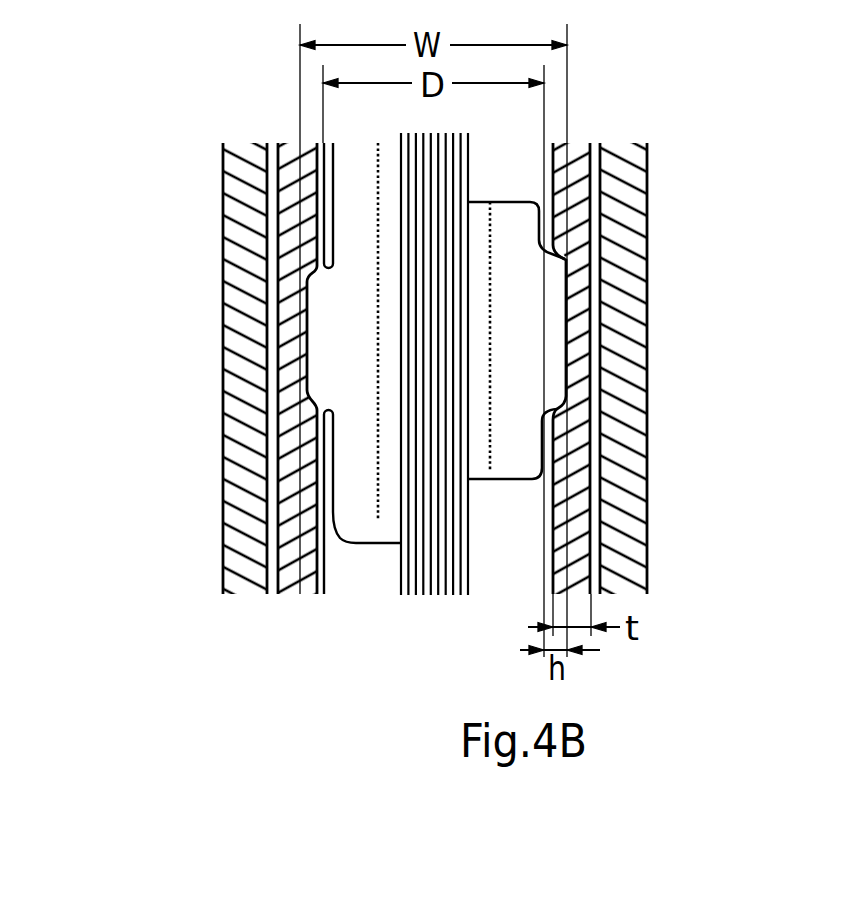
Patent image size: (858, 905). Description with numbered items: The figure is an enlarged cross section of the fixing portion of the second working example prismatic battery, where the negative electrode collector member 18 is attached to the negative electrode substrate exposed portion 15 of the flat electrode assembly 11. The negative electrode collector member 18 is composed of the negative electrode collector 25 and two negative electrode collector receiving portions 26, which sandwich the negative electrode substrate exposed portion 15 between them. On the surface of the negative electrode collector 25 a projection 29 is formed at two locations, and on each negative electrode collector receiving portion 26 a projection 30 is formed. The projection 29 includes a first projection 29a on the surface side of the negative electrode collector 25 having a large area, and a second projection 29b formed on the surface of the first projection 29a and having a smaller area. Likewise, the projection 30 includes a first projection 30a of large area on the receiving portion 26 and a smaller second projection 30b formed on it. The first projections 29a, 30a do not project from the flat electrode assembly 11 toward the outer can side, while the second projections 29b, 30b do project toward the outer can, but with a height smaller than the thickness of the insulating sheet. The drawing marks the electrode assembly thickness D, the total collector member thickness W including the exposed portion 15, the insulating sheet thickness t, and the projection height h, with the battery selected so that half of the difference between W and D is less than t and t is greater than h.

The flat electrode assembly 11 is at (500, 173).
The negative electrode substrate exposed portion 15 is at (417, 187).
The negative electrode collector member 18 is at (413, 437).
The negative electrode collector 25 is at (385, 518).
The negative electrode collector receiving portion 26 is at (487, 467).
The projection 29 is at (221, 368).
The first projection 29a is at (380, 364).
The second projection 29b is at (312, 337).
The projection 30 is at (659, 340).
The first projection 30a is at (480, 400).
The second projection 30b is at (550, 302).